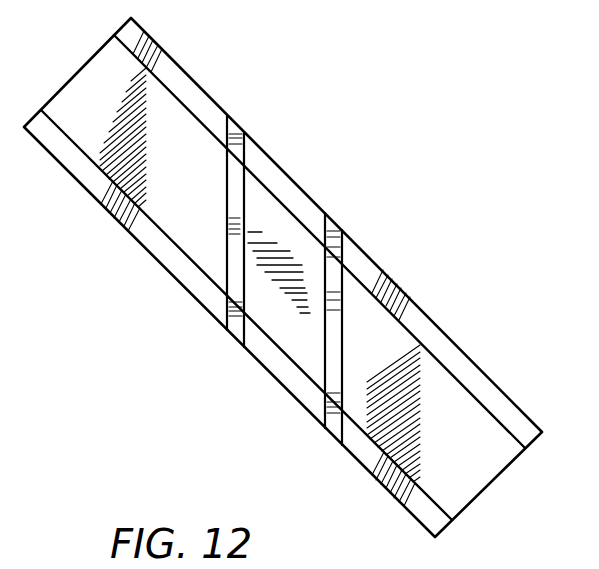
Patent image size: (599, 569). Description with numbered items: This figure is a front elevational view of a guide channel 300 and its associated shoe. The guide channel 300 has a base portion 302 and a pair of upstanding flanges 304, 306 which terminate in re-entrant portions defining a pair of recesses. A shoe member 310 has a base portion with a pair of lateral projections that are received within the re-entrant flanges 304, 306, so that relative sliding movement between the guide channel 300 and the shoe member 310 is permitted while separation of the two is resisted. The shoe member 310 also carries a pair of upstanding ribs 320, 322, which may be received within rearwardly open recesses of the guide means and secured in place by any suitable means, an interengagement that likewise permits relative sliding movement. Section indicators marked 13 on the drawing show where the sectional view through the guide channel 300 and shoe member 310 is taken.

The guide channel 300 is at (187, 68).
The base portion 302 is at (487, 443).
The upstanding flange 304 is at (412, 506).
The upstanding flange 306 is at (478, 381).
The shoe member 310 is at (272, 237).
The upstanding rib 320 is at (237, 207).
The upstanding rib 322 is at (345, 295).
The section line 13- 13 is at (463, 338).